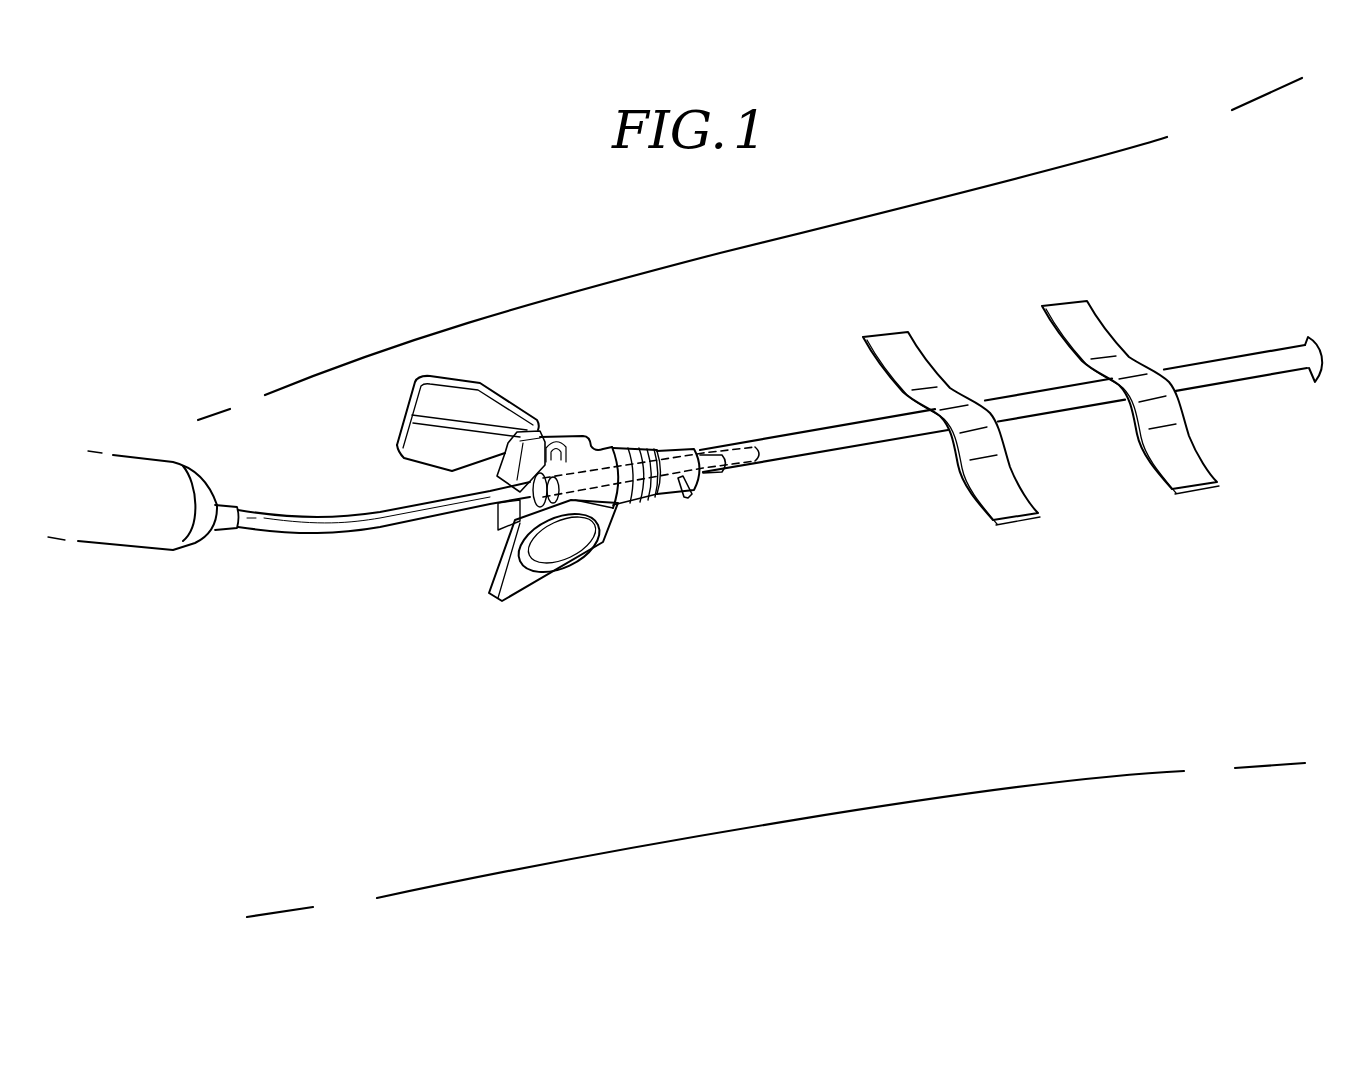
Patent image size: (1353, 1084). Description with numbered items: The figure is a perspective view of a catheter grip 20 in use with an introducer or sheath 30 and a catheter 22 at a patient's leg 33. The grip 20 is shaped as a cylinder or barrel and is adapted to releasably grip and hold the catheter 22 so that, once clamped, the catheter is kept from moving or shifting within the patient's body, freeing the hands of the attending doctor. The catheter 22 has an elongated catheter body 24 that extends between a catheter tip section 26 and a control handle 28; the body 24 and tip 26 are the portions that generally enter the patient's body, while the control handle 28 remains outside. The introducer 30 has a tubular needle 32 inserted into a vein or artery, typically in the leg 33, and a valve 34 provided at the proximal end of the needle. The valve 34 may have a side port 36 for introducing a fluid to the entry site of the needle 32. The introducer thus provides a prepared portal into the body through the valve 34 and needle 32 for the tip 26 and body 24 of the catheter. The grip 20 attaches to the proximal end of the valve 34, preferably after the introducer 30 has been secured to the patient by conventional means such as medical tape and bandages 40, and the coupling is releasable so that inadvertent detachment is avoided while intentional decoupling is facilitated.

The catheter grip 20 is at (541, 437).
The catheter 22 is at (302, 532).
The catheter body 24 is at (348, 512).
The catheter tip section 26 is at (750, 447).
The control handle 28 is at (148, 458).
The introducer or sheath 30 is at (647, 448).
The tubular needle 32 is at (1225, 367).
The leg 33 is at (975, 195).
The valve 34 is at (605, 447).
The side port 36 is at (685, 497).
The securement strap 40 is at (890, 342).